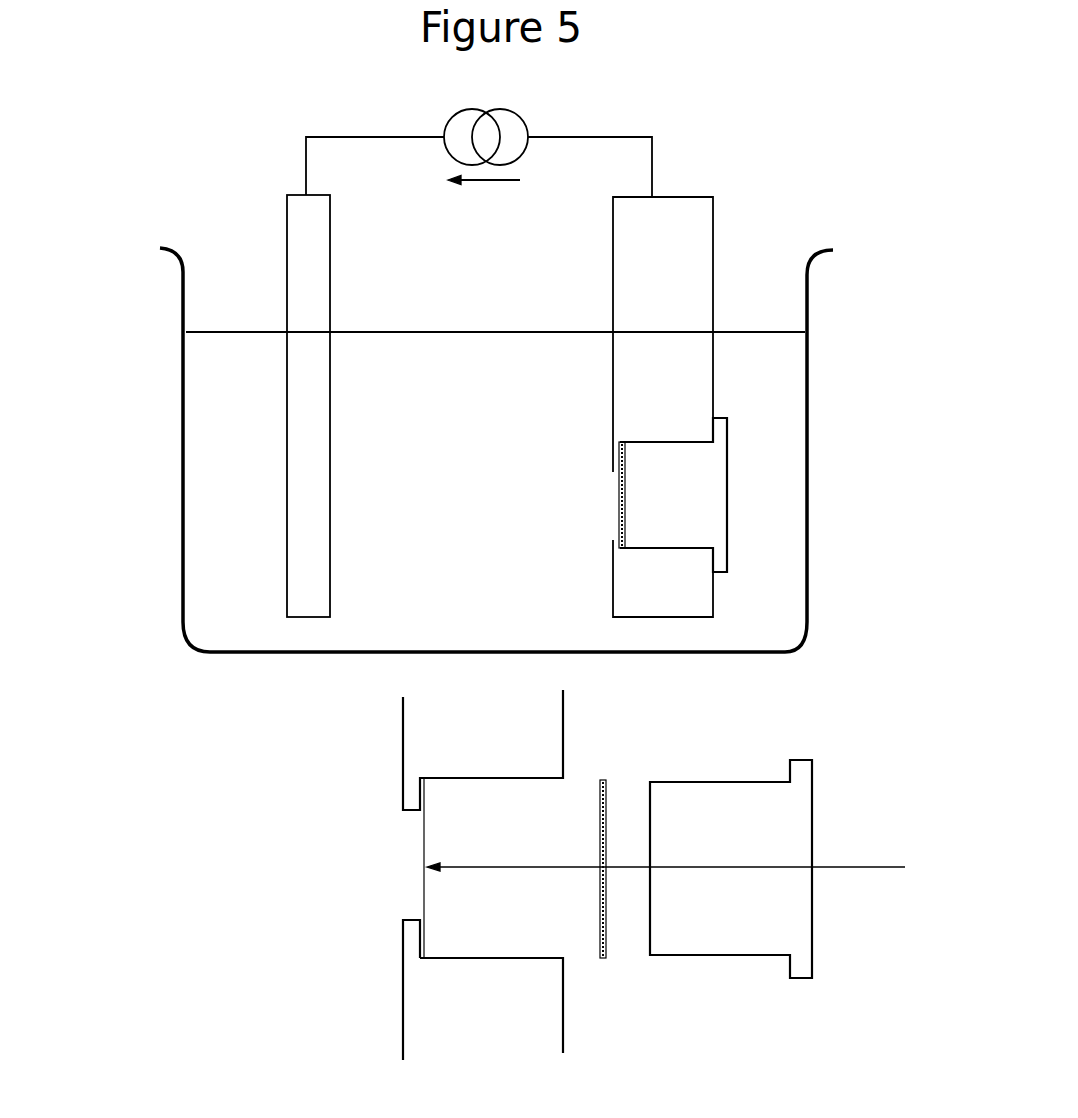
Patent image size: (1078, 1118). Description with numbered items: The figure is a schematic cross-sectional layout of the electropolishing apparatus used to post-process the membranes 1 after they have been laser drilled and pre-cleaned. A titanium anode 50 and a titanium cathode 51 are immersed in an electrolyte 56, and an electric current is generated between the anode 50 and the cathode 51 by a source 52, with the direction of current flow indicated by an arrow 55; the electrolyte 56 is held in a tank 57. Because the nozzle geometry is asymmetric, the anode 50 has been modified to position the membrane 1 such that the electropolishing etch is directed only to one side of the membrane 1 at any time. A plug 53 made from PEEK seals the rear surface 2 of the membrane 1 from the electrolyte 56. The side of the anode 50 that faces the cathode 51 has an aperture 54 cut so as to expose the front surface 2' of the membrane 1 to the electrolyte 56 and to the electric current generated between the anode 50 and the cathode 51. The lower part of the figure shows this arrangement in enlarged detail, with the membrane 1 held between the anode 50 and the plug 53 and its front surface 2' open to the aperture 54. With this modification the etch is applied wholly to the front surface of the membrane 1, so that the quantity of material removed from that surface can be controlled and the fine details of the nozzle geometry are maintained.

The membrane 1 is at (618, 525).
The rear surface 2 is at (584, 685).
The front surface 2' is at (755, 700).
The titanium anode 50 is at (710, 195).
The titanium cathode 51 is at (287, 222).
The current source 52 is at (527, 122).
The plug 53 is at (727, 476).
The aperture 54 is at (410, 872).
The current direction 55 is at (487, 183).
The electrolyte 56 is at (217, 540).
The tank 57 is at (200, 648).